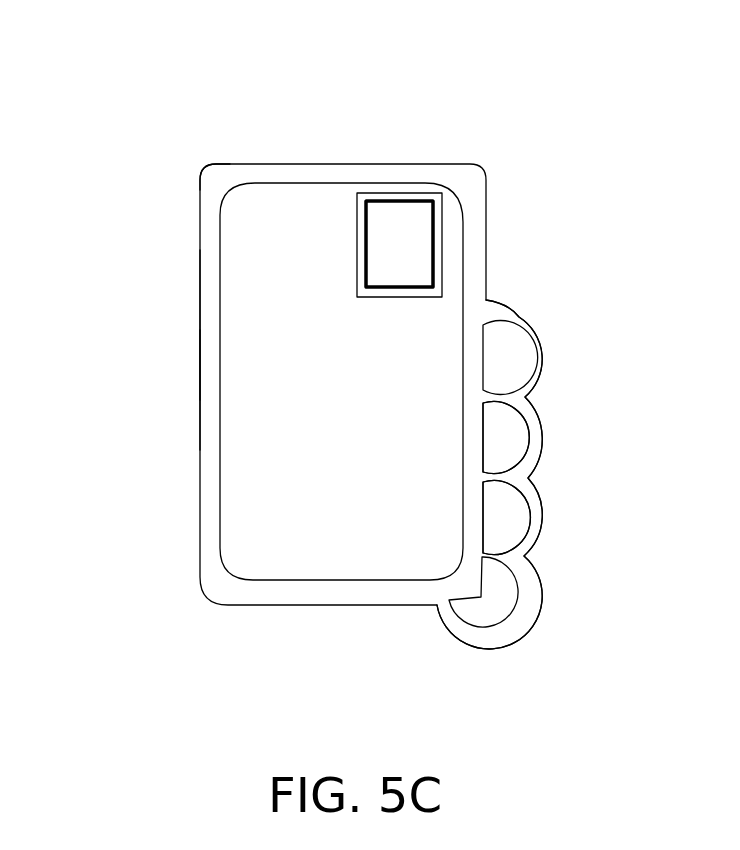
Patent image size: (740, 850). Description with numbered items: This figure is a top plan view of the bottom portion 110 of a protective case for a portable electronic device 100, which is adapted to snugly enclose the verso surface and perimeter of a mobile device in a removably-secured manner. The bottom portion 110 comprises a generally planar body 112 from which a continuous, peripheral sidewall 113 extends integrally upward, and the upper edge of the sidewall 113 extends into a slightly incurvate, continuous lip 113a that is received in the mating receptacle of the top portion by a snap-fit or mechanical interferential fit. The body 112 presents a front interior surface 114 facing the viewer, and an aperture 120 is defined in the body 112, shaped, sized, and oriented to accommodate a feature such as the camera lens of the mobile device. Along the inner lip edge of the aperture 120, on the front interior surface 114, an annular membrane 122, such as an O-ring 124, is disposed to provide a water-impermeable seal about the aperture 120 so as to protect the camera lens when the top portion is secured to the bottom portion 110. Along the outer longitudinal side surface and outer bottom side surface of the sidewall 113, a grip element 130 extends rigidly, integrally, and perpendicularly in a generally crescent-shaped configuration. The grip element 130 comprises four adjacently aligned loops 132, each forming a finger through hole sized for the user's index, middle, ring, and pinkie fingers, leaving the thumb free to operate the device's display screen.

The protective case for a portable electronic device 100 is at (278, 110).
The bottom portion 110 is at (482, 163).
The body 112 is at (187, 319).
The sidewall 113 is at (200, 388).
The continuous lip 113a is at (166, 163).
The front interior surface 114 is at (342, 408).
The aperture 120 is at (403, 212).
The annular membrane 122 is at (437, 258).
The O-ring 124 is at (437, 258).
The grip element 130 is at (552, 388).
The loops 132 is at (544, 500).